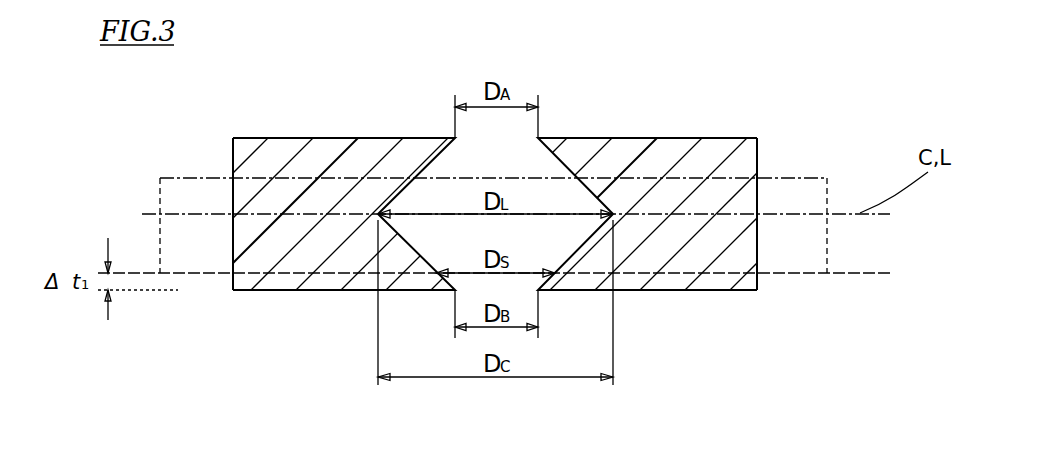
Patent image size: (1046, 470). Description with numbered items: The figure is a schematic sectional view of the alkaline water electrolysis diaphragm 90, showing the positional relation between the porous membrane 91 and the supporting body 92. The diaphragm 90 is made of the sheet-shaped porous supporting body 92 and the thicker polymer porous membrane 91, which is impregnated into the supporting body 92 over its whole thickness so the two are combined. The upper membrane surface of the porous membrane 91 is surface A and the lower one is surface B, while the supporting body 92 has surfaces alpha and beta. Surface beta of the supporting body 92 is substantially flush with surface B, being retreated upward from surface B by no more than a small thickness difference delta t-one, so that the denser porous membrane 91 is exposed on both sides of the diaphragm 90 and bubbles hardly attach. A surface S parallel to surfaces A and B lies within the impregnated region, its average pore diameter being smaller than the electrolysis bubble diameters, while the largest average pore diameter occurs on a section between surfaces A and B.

The alkaline water electrolysis diaphragm 90 is at (498, 185).
The porous membrane 91 is at (757, 157).
The supporting body 92 is at (188, 174).
The surface A is at (682, 138).
The surface B is at (687, 291).
The surface S is at (860, 273).